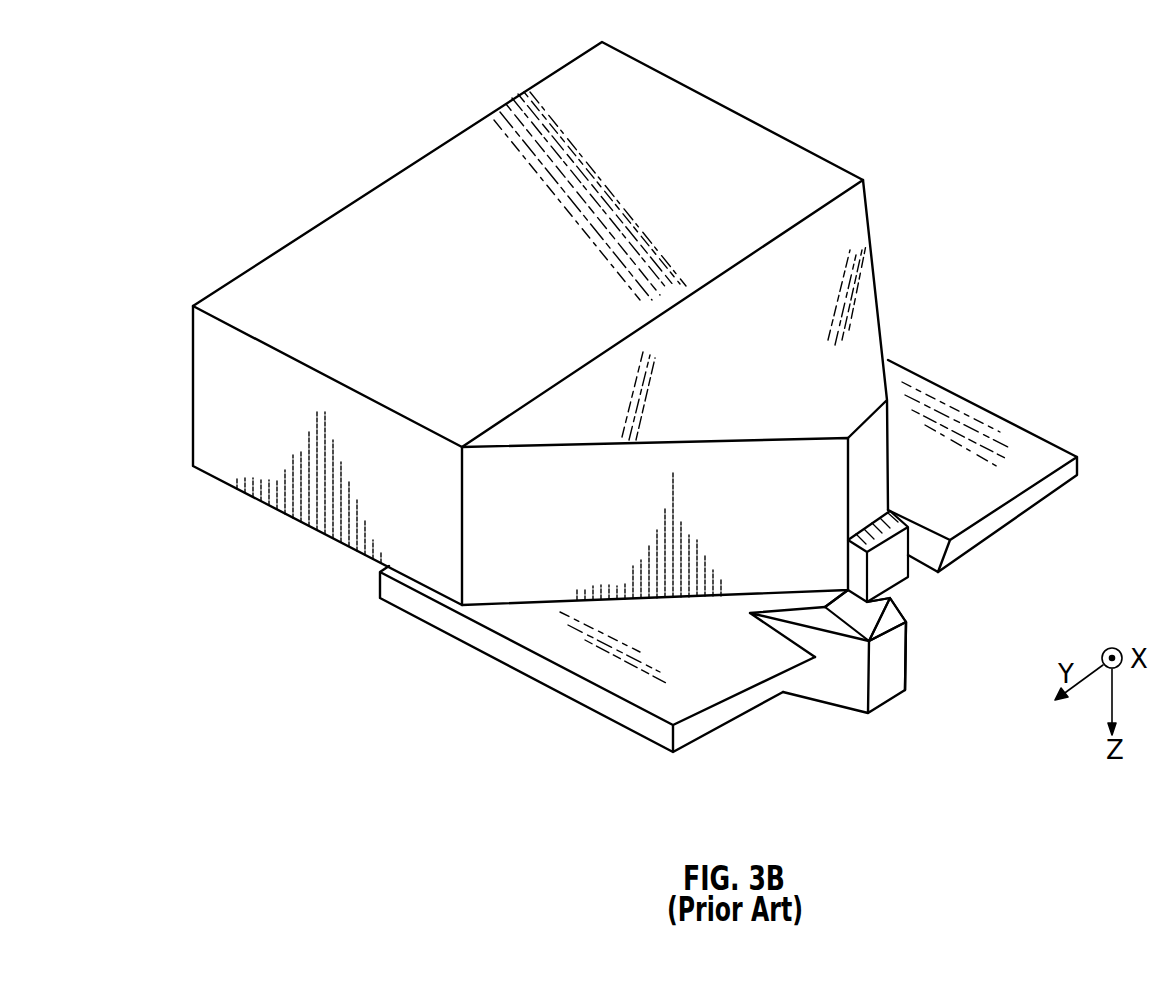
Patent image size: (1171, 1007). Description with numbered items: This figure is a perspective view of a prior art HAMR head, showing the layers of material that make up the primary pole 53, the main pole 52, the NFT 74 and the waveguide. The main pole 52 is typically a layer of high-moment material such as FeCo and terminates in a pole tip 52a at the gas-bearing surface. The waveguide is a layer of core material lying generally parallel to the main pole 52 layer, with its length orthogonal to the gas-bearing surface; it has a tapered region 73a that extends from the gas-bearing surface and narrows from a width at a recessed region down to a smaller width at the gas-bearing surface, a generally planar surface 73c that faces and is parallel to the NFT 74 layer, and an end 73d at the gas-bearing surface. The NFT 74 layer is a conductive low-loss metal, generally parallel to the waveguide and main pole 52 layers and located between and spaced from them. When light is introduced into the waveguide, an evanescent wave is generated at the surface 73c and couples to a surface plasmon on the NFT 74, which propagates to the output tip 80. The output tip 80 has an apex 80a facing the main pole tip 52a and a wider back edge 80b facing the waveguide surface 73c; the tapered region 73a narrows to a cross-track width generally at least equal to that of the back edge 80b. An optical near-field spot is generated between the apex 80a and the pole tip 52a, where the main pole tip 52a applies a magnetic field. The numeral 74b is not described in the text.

The primary pole 53 is at (478, 150).
The NFT 74 is at (1006, 437).
The lower plate 74b is at (379, 592).
The main pole 52 is at (896, 517).
The pole tip 52a is at (925, 562).
The output tip 80 is at (843, 610).
The apex 80a is at (892, 598).
The back edge 80b is at (904, 642).
The tapered region 73a is at (840, 695).
The planar surface 73c is at (780, 670).
The end 73d is at (888, 675).